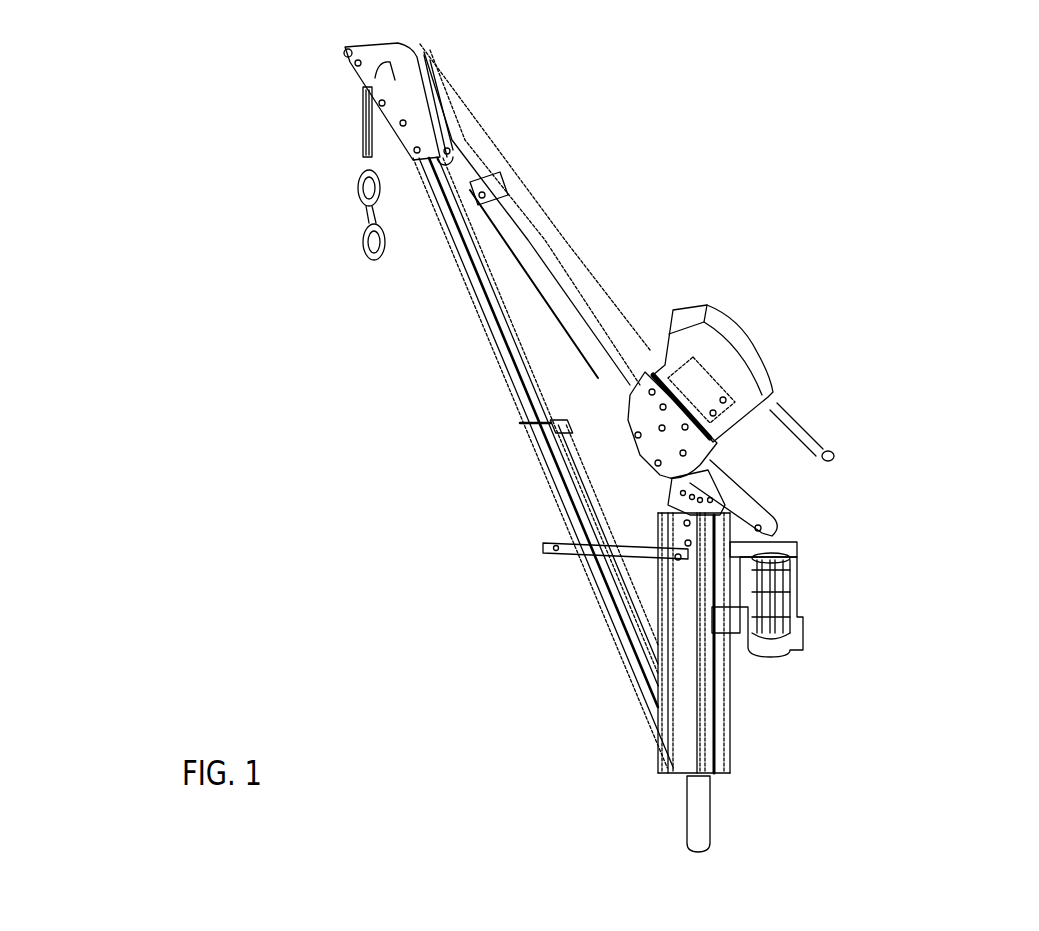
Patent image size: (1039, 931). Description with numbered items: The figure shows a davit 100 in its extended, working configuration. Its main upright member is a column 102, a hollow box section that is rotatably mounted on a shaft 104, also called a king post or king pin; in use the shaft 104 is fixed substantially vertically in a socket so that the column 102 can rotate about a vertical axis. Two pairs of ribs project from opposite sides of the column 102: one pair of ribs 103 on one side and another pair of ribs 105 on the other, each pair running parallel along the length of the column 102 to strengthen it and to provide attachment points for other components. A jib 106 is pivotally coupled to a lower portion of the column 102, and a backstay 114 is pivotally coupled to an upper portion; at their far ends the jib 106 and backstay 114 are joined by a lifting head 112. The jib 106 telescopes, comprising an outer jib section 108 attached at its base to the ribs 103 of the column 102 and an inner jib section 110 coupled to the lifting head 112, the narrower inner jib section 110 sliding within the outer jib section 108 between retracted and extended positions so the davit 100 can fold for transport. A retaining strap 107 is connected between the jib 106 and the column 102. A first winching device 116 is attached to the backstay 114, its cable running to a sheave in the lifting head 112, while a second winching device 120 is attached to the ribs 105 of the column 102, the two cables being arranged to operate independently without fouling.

The davit 100 is at (810, 243).
The column 102 is at (688, 727).
The ribs 103 is at (668, 645).
The shaft 104 is at (713, 800).
The ribs 105 is at (717, 693).
The jib 106 is at (478, 463).
The retaining strap 107 is at (578, 550).
The outer jib section 108 is at (590, 580).
The inner jib section 110 is at (498, 350).
The lifting head 112 is at (340, 90).
The backstay 114 is at (553, 300).
The first winching device 116 is at (772, 388).
The second winching device 120 is at (778, 627).